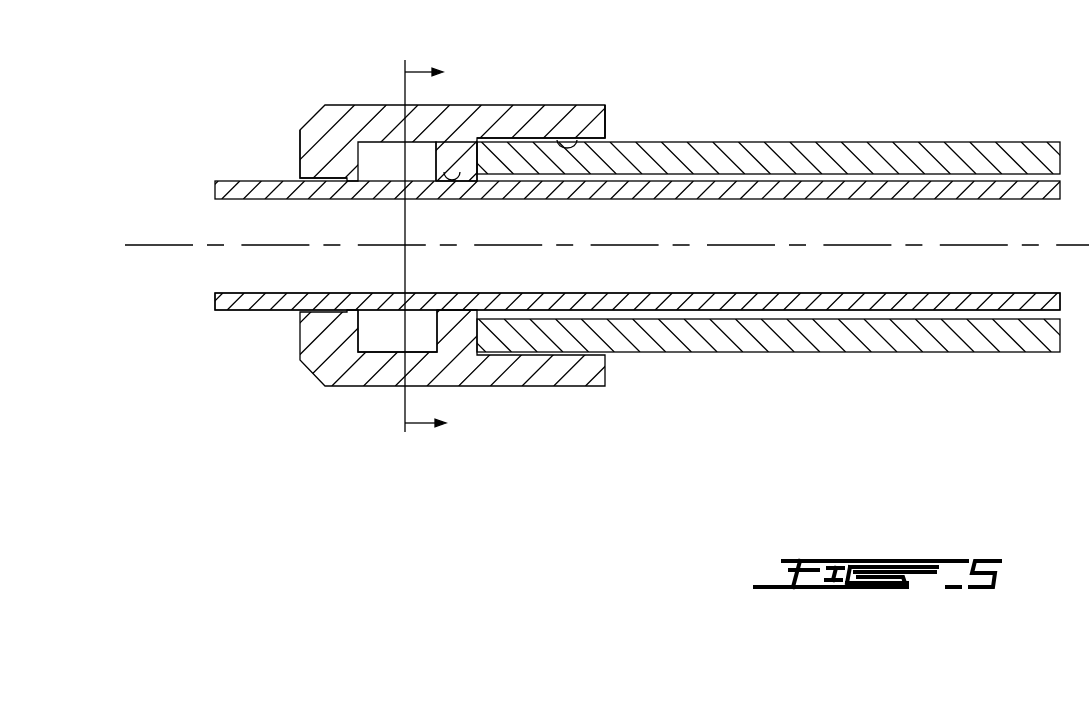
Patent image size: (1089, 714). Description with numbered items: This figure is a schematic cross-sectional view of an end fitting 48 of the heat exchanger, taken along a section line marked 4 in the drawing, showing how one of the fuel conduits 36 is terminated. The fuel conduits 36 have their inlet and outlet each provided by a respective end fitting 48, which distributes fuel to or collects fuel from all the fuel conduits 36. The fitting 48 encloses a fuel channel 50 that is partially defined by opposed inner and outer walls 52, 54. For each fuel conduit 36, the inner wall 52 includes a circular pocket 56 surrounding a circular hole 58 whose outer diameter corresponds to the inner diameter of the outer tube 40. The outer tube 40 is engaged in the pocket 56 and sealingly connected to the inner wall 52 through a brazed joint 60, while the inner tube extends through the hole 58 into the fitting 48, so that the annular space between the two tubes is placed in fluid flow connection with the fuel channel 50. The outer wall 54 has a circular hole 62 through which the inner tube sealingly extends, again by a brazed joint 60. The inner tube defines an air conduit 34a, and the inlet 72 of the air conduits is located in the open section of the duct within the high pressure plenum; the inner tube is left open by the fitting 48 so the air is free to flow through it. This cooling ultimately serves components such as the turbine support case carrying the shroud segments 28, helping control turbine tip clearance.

The section line 4- 4 is at (412, 248).
The shroud segments 28 is at (998, 321).
The air conduit 34a is at (992, 223).
The fuel conduit 36 is at (747, 331).
The outer tube 40 is at (845, 136).
The end fitting 48 is at (575, 399).
The fuel channel 50 is at (383, 346).
The inner wall 52 is at (463, 153).
The outer wall 54 is at (328, 143).
The circular pocket 56 is at (577, 140).
The circular hole 58 is at (444, 172).
The brazed joint 60 is at (291, 170).
The circular hole 62 is at (302, 292).
The inlet 72 is at (237, 219).